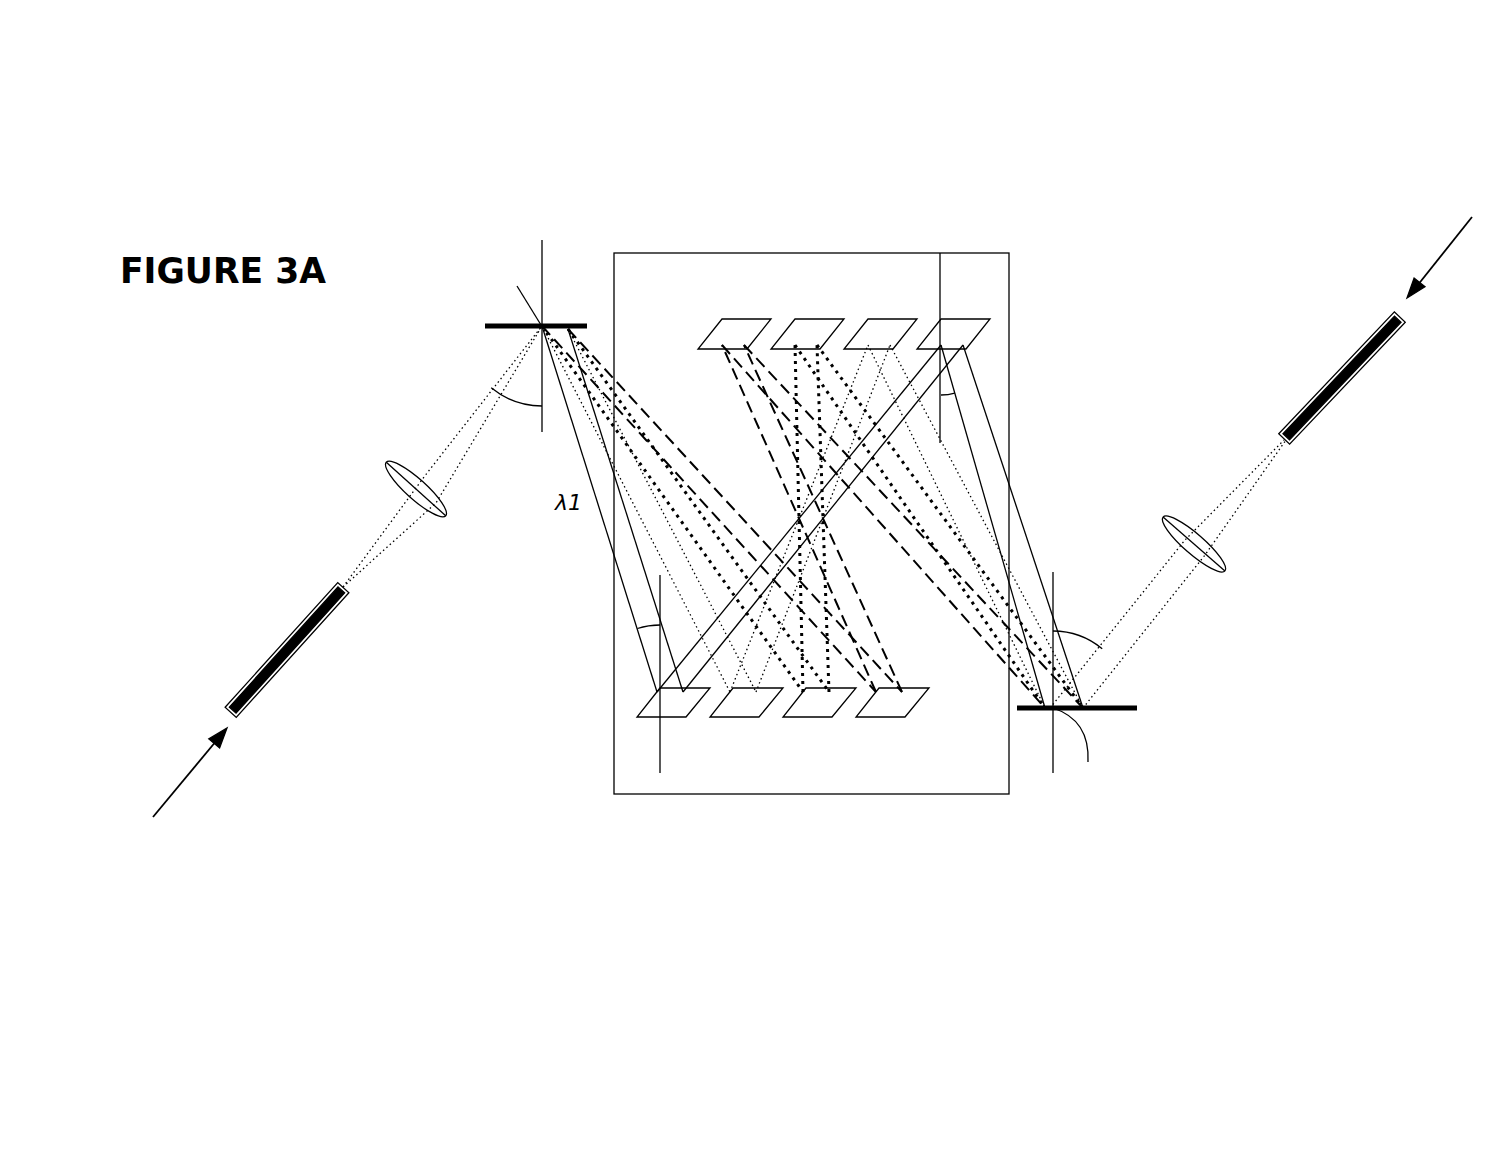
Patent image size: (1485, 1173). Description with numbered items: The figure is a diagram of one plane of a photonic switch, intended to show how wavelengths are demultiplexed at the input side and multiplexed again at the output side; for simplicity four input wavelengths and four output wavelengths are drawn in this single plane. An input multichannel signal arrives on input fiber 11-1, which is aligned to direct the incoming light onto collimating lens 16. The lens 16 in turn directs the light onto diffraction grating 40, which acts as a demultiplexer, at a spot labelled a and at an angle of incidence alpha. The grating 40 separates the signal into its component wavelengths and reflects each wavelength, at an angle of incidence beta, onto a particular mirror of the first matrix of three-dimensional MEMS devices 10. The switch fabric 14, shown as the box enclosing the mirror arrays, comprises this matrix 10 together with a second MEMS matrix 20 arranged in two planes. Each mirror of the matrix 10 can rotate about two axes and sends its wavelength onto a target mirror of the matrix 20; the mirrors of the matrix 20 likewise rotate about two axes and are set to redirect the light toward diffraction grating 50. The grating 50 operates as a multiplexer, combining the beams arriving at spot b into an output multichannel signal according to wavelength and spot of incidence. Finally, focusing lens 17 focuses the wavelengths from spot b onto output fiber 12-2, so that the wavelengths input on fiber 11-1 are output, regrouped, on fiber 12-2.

The matrix of 3-D MEMS devices 10 is at (776, 762).
The switch fabric 14 is at (650, 253).
The collimating lens 16 is at (387, 458).
The focusing lens 17 is at (1178, 517).
The MEMS matrix 20 is at (931, 290).
The diffraction grating 40 is at (492, 325).
The diffraction grating 50 is at (1107, 708).
The input fiber 11-1 is at (313, 638).
The output fiber 12-2 is at (1326, 406).